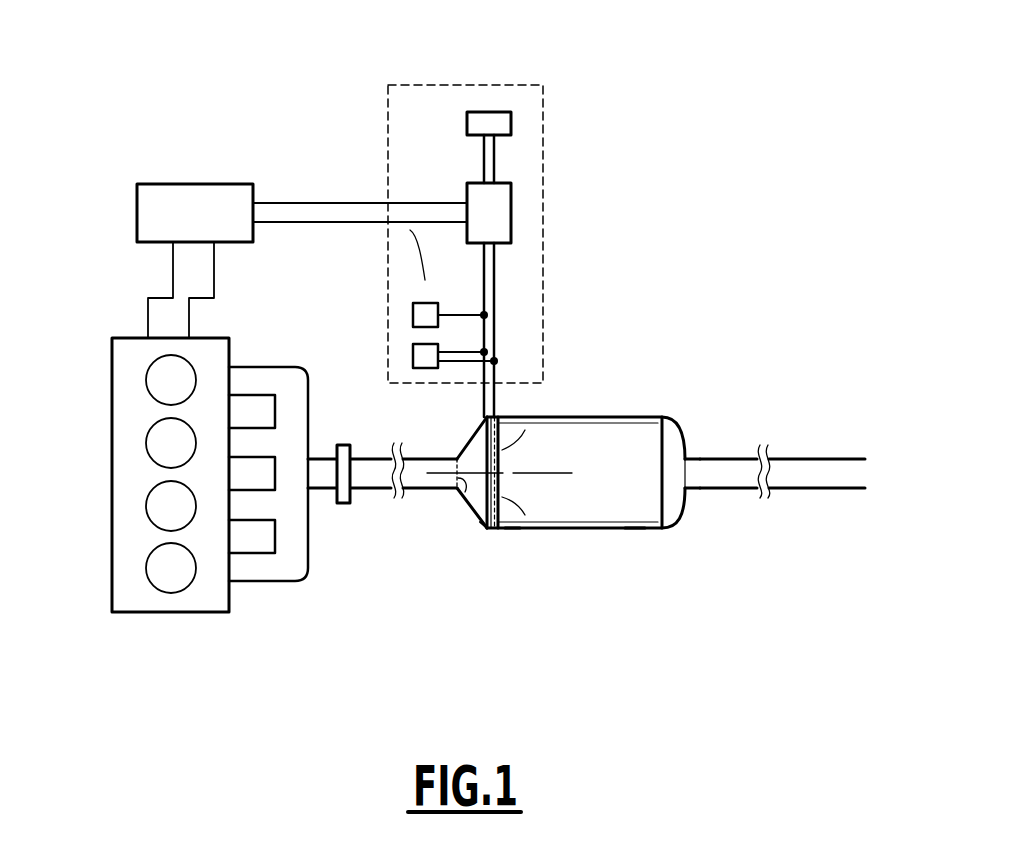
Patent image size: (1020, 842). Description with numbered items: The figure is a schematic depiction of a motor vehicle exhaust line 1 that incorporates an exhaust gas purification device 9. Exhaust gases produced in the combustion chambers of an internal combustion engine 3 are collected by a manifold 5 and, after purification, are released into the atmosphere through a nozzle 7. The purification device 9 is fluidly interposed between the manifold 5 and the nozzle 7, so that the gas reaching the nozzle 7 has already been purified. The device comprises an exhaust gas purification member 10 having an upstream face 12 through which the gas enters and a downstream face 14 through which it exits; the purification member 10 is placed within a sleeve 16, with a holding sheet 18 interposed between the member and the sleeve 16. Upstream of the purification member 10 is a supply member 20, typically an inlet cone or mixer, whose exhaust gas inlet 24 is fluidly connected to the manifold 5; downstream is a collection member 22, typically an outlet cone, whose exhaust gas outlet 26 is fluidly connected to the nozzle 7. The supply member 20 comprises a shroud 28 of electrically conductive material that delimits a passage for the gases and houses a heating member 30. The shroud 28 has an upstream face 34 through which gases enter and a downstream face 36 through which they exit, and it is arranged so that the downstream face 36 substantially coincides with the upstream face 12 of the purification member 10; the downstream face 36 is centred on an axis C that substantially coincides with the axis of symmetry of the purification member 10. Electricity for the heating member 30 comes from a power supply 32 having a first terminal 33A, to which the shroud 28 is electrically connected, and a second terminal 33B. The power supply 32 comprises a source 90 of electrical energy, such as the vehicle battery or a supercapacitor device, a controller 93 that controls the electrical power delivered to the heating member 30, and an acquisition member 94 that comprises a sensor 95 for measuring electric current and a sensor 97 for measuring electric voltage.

The exhaust line 1 is at (600, 427).
The internal combustion engine 3 is at (125, 433).
The manifold 5 is at (291, 532).
The nozzle 7 is at (822, 456).
The exhaust gas purification device 9 is at (579, 411).
The exhaust gas purification member 10 is at (595, 420).
The upstream face 12 is at (502, 450).
The downstream face 14 is at (667, 441).
The sleeve 16 is at (511, 529).
The holding sheet 18 is at (635, 528).
The supply member 20 is at (458, 530).
The collection member 22 is at (700, 439).
The exhaust gas inlet 24 is at (460, 482).
The exhaust gas outlet 26 is at (680, 472).
The shroud 28 is at (463, 498).
The heating member 30 is at (472, 528).
The power supply 32 is at (472, 202).
The first terminal 33A is at (484, 400).
The second terminal 33B is at (500, 397).
The upstream face 34 is at (460, 476).
The downstream face 36 is at (502, 497).
The source of electrical energy 90 is at (488, 120).
The controller 93 is at (490, 212).
The acquisition member 94 is at (410, 230).
The electric current sensor 95 is at (413, 317).
The electric voltage sensor 97 is at (420, 355).
The axis C is at (553, 473).